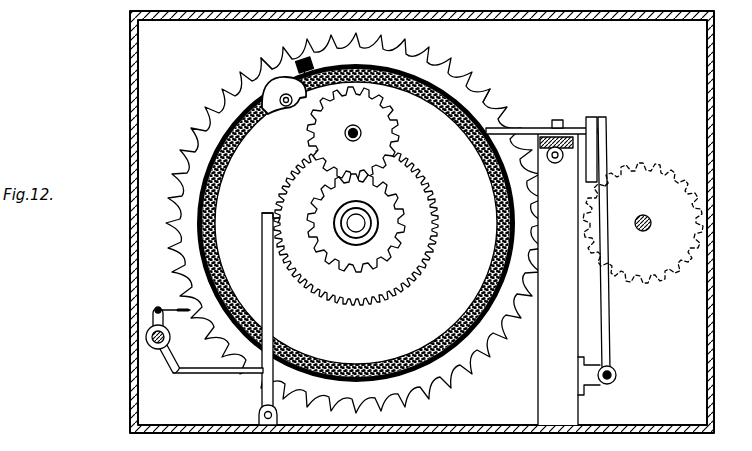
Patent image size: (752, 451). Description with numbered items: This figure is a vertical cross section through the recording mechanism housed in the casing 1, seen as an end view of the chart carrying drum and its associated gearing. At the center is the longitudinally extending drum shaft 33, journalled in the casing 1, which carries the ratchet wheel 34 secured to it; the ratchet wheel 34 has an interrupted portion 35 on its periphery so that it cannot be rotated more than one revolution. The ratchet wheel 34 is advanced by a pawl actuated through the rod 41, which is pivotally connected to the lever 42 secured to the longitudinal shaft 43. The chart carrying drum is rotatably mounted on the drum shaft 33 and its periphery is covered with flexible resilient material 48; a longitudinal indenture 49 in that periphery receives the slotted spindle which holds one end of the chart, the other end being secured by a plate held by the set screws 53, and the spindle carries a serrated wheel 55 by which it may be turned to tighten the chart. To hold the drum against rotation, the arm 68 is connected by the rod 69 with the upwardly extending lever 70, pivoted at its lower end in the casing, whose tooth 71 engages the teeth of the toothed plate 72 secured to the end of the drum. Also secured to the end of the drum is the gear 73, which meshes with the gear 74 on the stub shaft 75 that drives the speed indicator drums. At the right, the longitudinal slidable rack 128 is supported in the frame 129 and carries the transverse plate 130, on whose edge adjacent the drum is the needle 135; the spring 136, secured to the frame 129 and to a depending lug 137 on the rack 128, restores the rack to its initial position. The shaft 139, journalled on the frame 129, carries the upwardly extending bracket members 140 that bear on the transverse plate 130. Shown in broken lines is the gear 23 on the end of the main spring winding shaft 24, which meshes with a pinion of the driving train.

The casing 1 is at (130, 251).
The ratchet wheel 34 is at (443, 60).
The interrupted portion 35 is at (272, 61).
The needle 135 is at (499, 97).
The flexible resilient material 48 is at (475, 144).
The toothed plate 72 is at (356, 223).
The gear 73 is at (388, 231).
The gear 74 is at (378, 139).
The stub shaft 75 is at (354, 126).
The drum shaft 33 is at (355, 228).
The lever 70 is at (273, 331).
The tooth 71 is at (276, 217).
The rod 69 is at (218, 381).
The arm 68 is at (183, 358).
The rod 41 is at (157, 312).
The lever 42 is at (151, 312).
The longitudinal shaft 43 is at (147, 342).
The wheel 55 is at (273, 95).
The longitudinal indenture 49 is at (300, 111).
The set screws 53 is at (318, 65).
The transverse plate 130 is at (527, 128).
The rack 128 is at (565, 127).
The frame 129 is at (578, 142).
The spring 136 is at (578, 152).
The depending lug 137 is at (558, 164).
The bracket members 140 is at (610, 302).
The shaft 139 is at (616, 373).
The main spring winding shaft 24 is at (643, 214).
The gear 23 is at (657, 166).